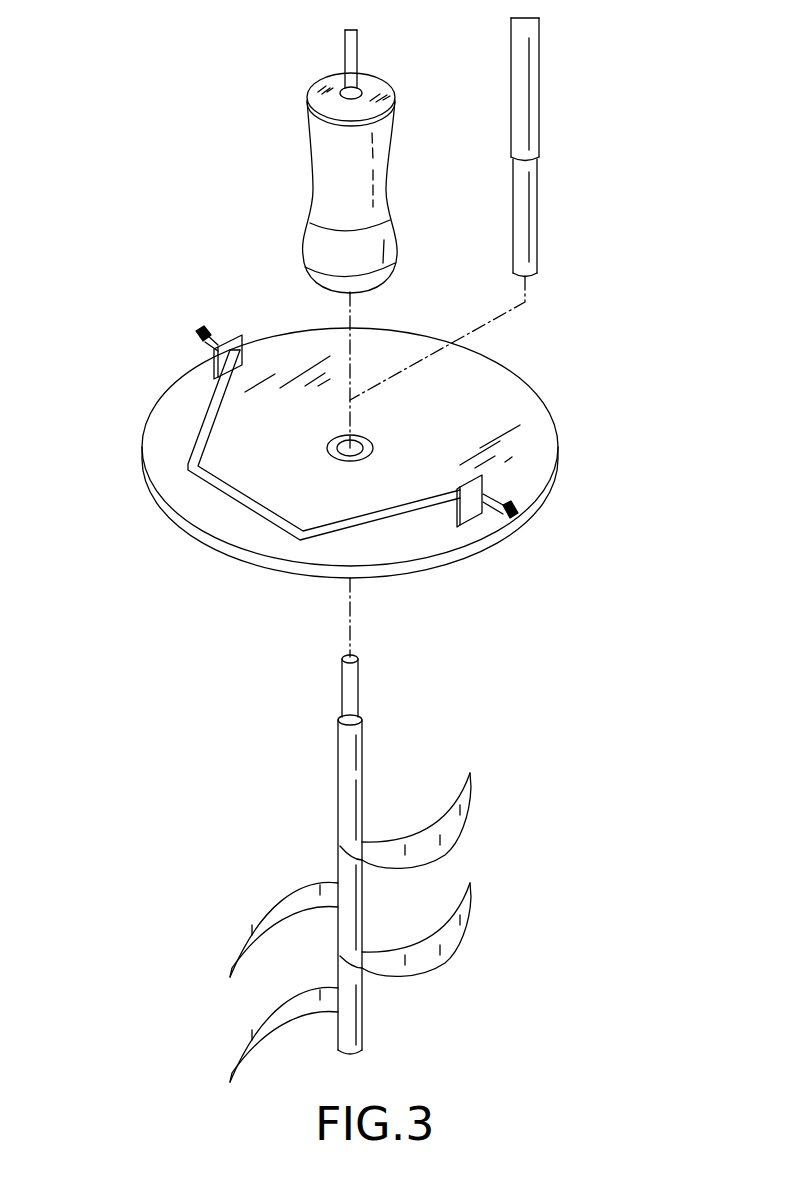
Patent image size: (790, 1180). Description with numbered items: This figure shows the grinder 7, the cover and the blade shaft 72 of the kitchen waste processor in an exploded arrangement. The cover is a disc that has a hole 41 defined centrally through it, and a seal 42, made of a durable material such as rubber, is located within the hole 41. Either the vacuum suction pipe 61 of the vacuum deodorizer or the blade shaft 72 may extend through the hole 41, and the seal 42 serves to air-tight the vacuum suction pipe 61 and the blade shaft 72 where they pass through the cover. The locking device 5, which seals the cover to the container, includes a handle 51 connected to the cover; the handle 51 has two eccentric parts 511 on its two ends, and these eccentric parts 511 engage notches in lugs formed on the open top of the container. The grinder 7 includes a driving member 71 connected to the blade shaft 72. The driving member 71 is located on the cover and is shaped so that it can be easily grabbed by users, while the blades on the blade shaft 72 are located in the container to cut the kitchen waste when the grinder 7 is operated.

The locking device 5 is at (202, 531).
The grinder 7 is at (270, 199).
The hole 41 is at (373, 447).
The seal 42 is at (350, 448).
The handle 51 is at (197, 440).
The vacuum suction pipe 61 is at (538, 203).
The driving member 71 is at (313, 147).
The blade shaft 72 is at (338, 775).
The eccentric parts 511 is at (197, 333).